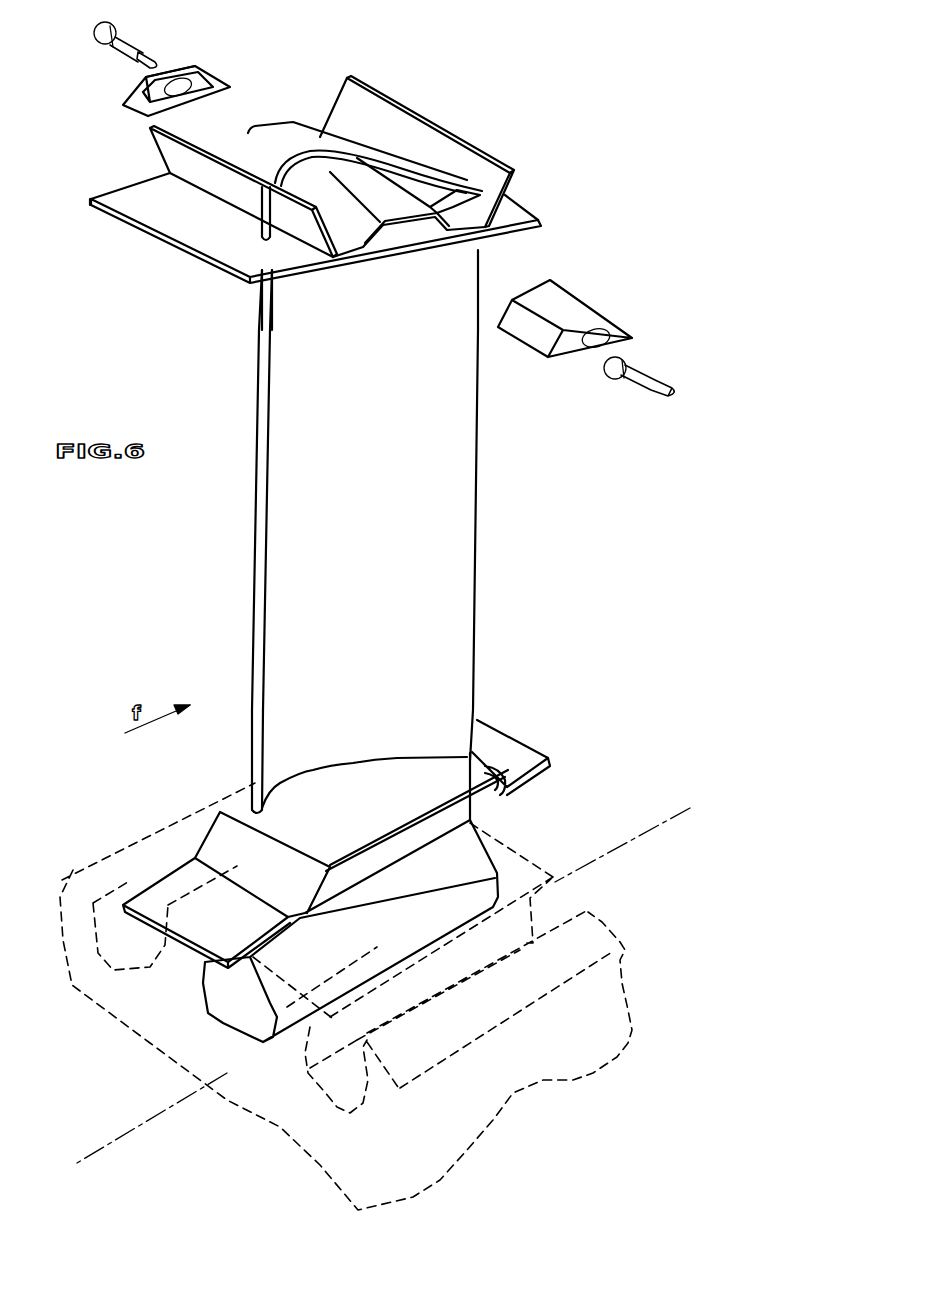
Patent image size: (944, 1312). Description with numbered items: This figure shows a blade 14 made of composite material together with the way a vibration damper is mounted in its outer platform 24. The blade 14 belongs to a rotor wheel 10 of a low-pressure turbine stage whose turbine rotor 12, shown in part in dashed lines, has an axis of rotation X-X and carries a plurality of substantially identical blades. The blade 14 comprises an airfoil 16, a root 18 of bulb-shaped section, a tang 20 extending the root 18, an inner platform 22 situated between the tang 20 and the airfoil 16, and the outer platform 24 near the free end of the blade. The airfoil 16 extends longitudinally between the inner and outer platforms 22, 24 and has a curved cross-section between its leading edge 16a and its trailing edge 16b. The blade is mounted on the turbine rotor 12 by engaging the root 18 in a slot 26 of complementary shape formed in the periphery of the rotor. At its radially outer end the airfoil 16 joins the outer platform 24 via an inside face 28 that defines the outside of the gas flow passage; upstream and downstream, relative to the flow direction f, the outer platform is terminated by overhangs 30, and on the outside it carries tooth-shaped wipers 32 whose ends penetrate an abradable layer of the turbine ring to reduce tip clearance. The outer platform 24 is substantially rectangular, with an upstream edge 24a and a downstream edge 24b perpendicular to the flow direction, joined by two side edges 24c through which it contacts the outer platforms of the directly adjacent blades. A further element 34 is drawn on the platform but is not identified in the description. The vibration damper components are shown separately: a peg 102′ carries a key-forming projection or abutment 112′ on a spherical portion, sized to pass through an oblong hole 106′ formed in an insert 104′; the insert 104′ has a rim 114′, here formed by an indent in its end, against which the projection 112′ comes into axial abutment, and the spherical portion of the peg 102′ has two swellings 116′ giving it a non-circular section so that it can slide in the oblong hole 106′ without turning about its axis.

The rotor wheel 10 is at (143, 1035).
The turbine rotor 12 is at (598, 925).
The blade 14 is at (341, 485).
The airfoil 16 is at (376, 485).
The leading edge 16a is at (265, 363).
The trailing edge 16b is at (480, 420).
The root 18 is at (230, 1000).
The tang 20 is at (472, 810).
The inner platform 22 is at (505, 747).
The outer platform 24 is at (328, 175).
The upstream edge 24a is at (183, 233).
The downstream edge 24b is at (515, 197).
The side edge 24c is at (137, 182).
The slot 26 is at (352, 1095).
The inside face 28 is at (293, 275).
The overhang 30 is at (163, 208).
The wiper 32 is at (207, 170).
The seal strip 34 is at (412, 232).
The peg 102′ is at (390, 200).
The insert 104′ is at (397, 191).
The oblong hole 106′ is at (173, 83).
The key-forming projection 112′ is at (120, 55).
The rim 114′ is at (240, 77).
The swelling 116′ is at (98, 52).